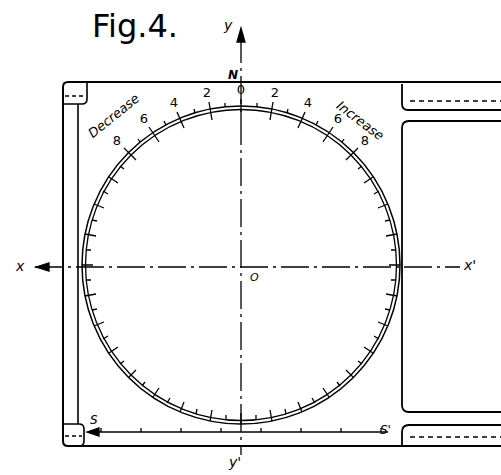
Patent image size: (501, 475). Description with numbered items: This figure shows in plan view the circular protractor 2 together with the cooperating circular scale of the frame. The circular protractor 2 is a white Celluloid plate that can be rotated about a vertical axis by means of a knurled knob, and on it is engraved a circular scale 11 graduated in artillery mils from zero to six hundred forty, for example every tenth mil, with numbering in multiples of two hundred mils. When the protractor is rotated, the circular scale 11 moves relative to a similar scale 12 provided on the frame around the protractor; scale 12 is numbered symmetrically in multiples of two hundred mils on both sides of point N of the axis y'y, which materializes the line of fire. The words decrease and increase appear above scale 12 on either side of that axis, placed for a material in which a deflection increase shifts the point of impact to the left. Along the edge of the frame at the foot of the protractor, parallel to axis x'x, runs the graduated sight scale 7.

The circular protractor 2 is at (241, 261).
The sight scale 7 is at (352, 432).
The circular scale 11 is at (377, 190).
The scale 12 is at (350, 143).